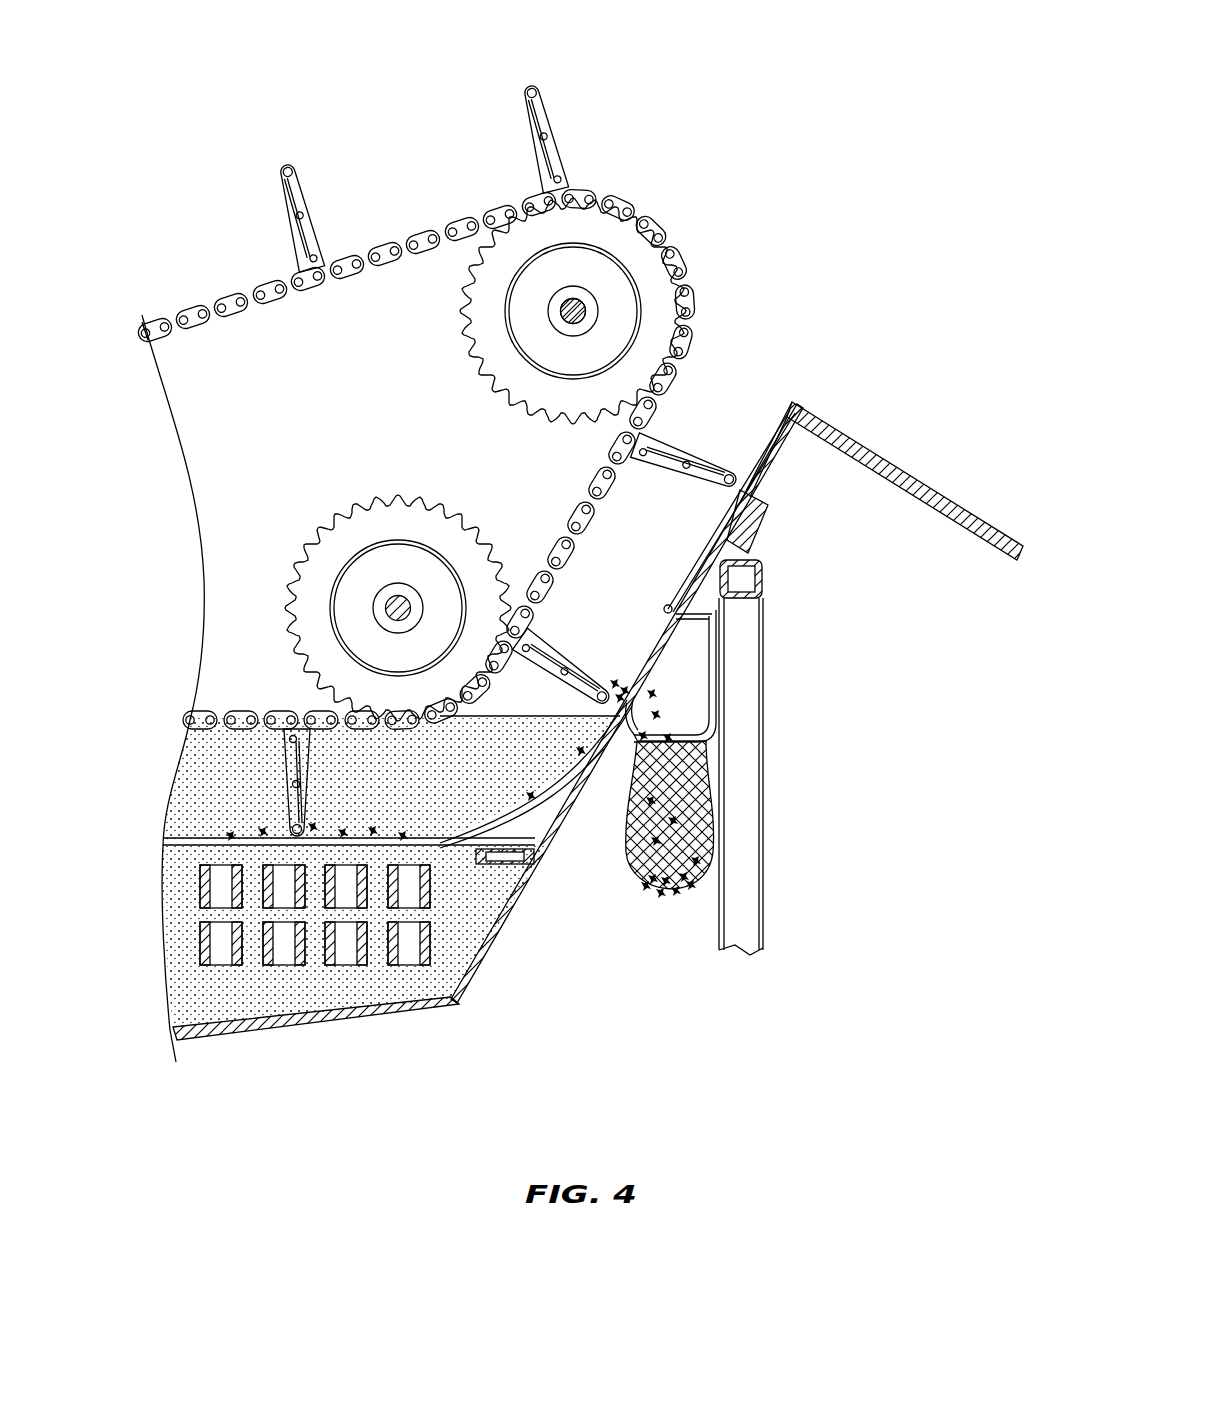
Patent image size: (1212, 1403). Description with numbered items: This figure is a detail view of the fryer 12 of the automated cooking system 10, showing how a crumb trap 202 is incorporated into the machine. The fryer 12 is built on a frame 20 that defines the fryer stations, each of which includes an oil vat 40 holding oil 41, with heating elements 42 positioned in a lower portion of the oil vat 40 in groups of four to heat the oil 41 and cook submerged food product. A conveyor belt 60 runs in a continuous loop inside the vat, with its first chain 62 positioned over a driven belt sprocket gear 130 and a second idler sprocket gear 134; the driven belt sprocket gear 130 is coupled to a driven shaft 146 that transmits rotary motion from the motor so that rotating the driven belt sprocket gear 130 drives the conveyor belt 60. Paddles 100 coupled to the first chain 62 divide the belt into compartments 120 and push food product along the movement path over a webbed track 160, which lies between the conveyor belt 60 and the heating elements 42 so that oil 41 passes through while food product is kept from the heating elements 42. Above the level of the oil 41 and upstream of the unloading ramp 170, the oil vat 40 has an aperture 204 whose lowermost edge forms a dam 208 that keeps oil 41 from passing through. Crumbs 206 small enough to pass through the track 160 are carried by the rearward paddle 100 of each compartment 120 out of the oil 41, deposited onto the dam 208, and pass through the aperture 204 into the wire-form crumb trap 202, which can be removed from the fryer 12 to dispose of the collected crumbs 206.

The automated cooking system 10 is at (812, 233).
The fryer 12 is at (460, 996).
The frame 20 is at (762, 886).
The oil vat 40 is at (505, 920).
The oil 41 is at (262, 750).
The heating elements 42 is at (285, 965).
The conveyor belt 60 is at (561, 105).
The first chain 62 is at (255, 310).
The paddles 100 is at (311, 203).
The compartment 120 is at (438, 433).
The driven belt sprocket gear 130 is at (470, 332).
The second idler sprocket gear 134 is at (405, 499).
The driven shaft 146 is at (565, 326).
The track 160 is at (183, 845).
The unloading ramp 170 is at (870, 460).
The crumb trap 202 is at (672, 893).
The aperture 204 is at (660, 655).
The crumbs 206 is at (615, 683).
The dam 208 is at (628, 742).